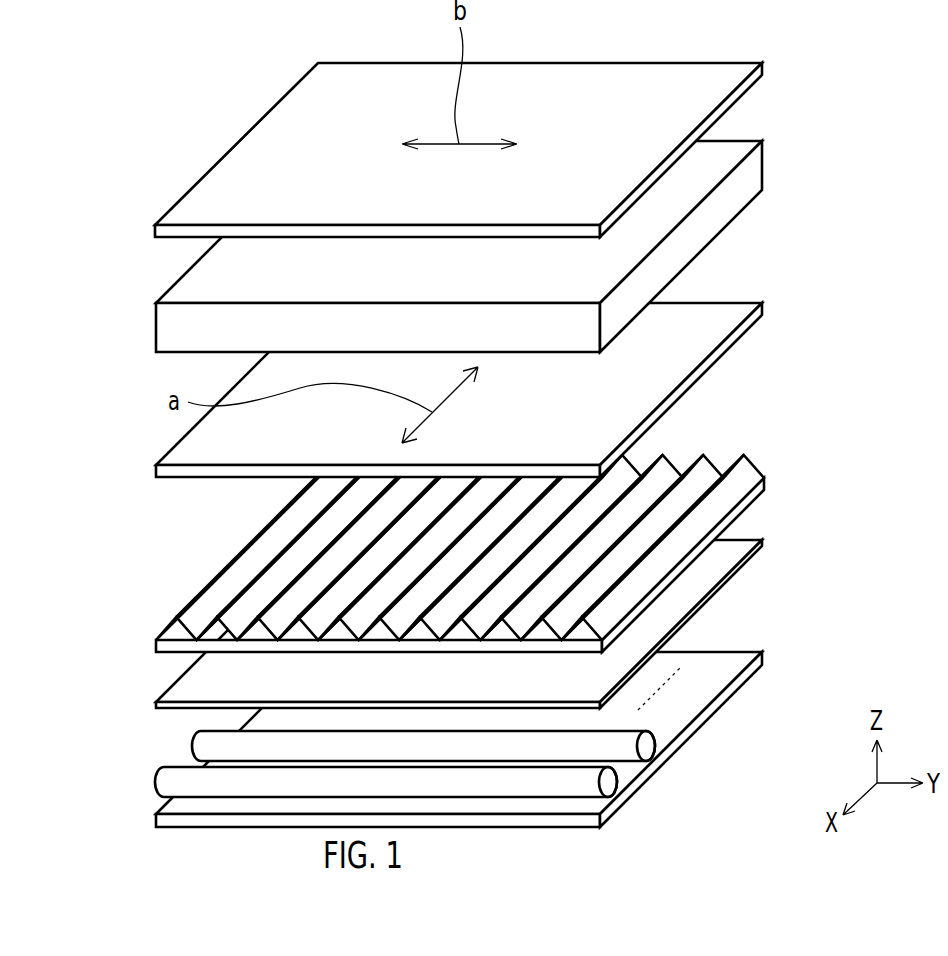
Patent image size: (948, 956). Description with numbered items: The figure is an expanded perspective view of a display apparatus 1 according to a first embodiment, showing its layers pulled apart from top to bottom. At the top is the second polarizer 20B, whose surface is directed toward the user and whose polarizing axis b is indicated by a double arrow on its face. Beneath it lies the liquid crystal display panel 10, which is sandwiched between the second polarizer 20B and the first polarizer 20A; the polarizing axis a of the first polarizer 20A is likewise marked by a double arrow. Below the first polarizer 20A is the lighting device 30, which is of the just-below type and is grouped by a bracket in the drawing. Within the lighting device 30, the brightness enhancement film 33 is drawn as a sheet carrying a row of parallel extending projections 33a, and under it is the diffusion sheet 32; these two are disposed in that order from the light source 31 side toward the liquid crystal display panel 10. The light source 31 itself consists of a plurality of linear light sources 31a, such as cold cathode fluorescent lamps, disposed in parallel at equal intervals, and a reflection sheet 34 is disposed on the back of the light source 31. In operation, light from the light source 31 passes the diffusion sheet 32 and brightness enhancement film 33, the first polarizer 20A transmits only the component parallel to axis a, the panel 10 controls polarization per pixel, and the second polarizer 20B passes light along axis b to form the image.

The display apparatus 1 is at (192, 92).
The liquid crystal display panel 10 is at (732, 193).
The first polarizer 20A is at (732, 315).
The second polarizer 20B is at (732, 77).
The lighting device 30 is at (790, 372).
The light source 31 is at (342, 758).
The linear light source 31a is at (207, 747).
The diffusion sheet 32 is at (159, 693).
The brightness enhancement film 33 is at (418, 553).
The projection 33a is at (198, 610).
The reflection sheet 34 is at (710, 688).